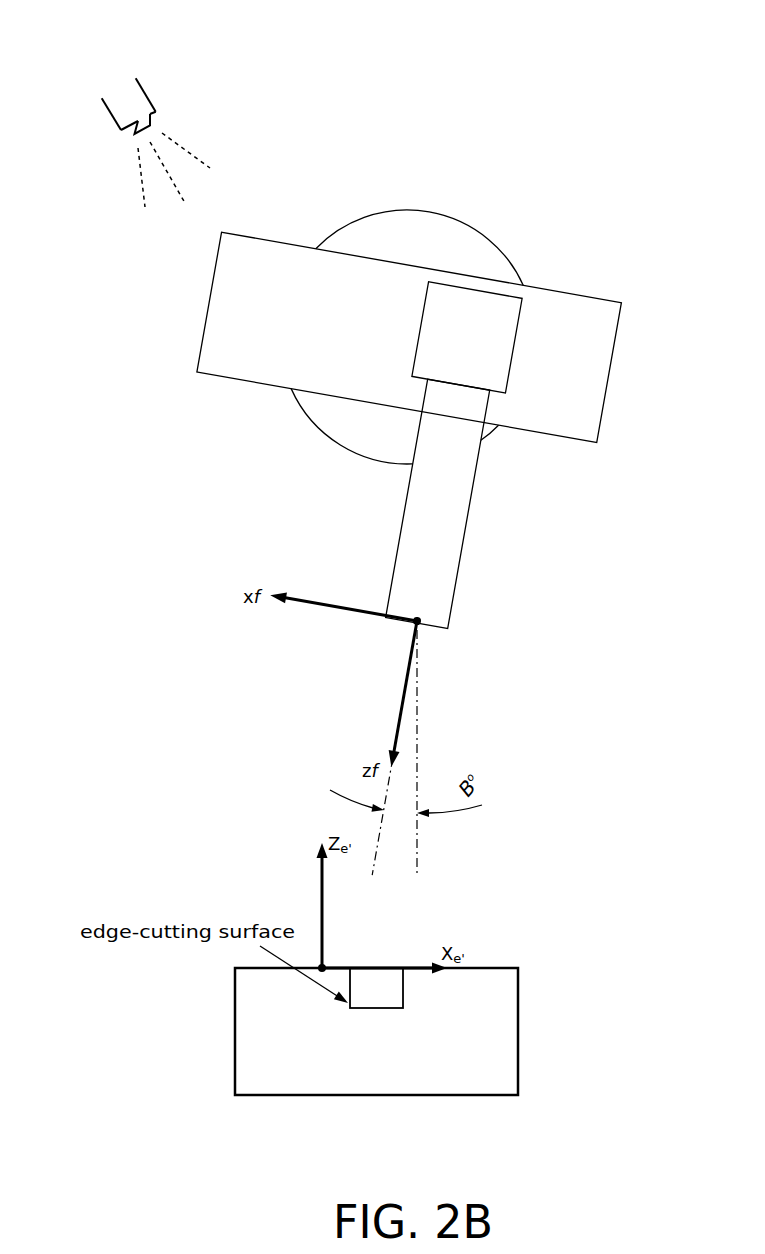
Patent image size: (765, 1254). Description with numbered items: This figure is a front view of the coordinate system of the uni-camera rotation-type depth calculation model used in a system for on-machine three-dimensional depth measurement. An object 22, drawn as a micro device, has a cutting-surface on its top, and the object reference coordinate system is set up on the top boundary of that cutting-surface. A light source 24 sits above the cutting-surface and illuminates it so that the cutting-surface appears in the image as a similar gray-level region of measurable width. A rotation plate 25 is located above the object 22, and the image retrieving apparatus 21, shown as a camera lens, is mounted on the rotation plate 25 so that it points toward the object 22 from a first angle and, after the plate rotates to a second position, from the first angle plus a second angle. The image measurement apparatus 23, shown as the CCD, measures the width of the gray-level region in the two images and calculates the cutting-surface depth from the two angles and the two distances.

The image retrieving apparatus 21 is at (470, 512).
The object 22 is at (518, 1060).
The image measurement apparatus 23 is at (512, 353).
The light source 24 is at (140, 142).
The rotation plate 25 is at (478, 228).